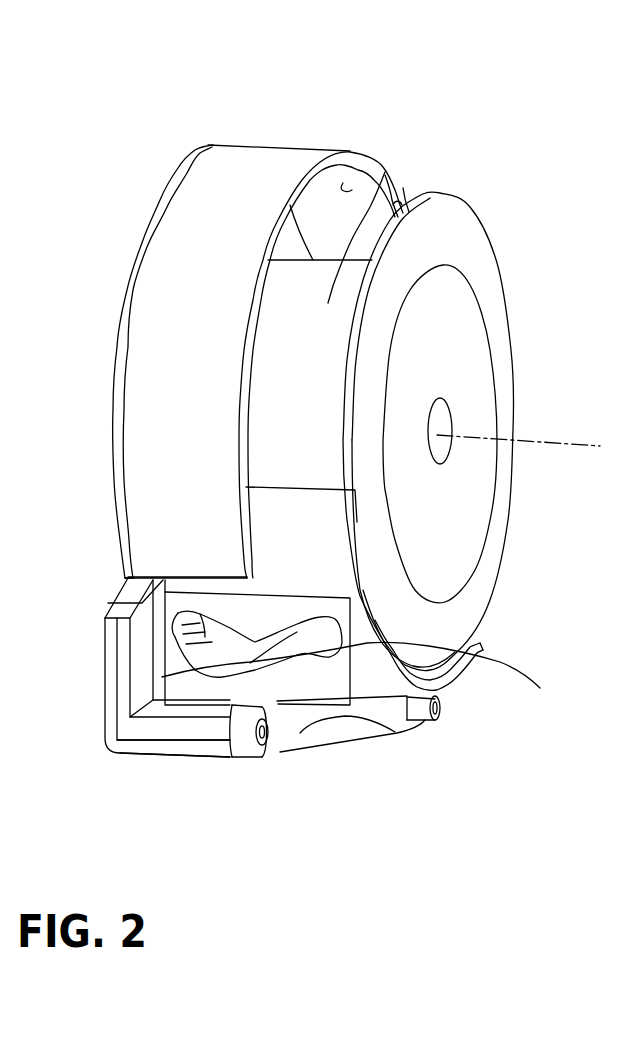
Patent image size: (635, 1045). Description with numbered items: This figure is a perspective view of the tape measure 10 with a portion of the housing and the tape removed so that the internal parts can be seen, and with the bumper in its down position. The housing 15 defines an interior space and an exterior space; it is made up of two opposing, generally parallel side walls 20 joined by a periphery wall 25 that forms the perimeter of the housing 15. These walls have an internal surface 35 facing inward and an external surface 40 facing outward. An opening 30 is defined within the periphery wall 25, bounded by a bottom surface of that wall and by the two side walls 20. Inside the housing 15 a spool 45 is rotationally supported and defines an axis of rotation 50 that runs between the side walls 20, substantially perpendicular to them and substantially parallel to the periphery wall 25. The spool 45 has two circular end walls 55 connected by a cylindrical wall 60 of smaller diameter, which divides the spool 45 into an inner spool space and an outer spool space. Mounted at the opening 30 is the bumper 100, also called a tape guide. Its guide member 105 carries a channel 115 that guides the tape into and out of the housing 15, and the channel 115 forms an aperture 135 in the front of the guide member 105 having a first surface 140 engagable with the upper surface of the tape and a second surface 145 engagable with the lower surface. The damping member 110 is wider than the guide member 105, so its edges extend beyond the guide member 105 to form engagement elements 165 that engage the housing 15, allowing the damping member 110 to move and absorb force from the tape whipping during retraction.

The tape measure 10 is at (175, 78).
The housing 15 is at (155, 216).
The side walls 20 is at (112, 407).
The periphery wall 25 is at (175, 315).
The opening 30 is at (150, 690).
The internal surface 35 is at (366, 184).
The external surface 40 is at (316, 148).
The spool 45 is at (520, 390).
The axis of rotation 50 is at (533, 440).
The circular end walls 55 is at (478, 275).
The cylindrical wall 60 is at (345, 185).
The bumper 100 is at (235, 611).
The guide member 105 is at (317, 693).
The damping member 110 is at (320, 573).
The channel 115 is at (225, 642).
The aperture 135 is at (147, 686).
The first surface 140 is at (510, 667).
The second surface 145 is at (250, 678).
The engagement elements 165 is at (393, 680).